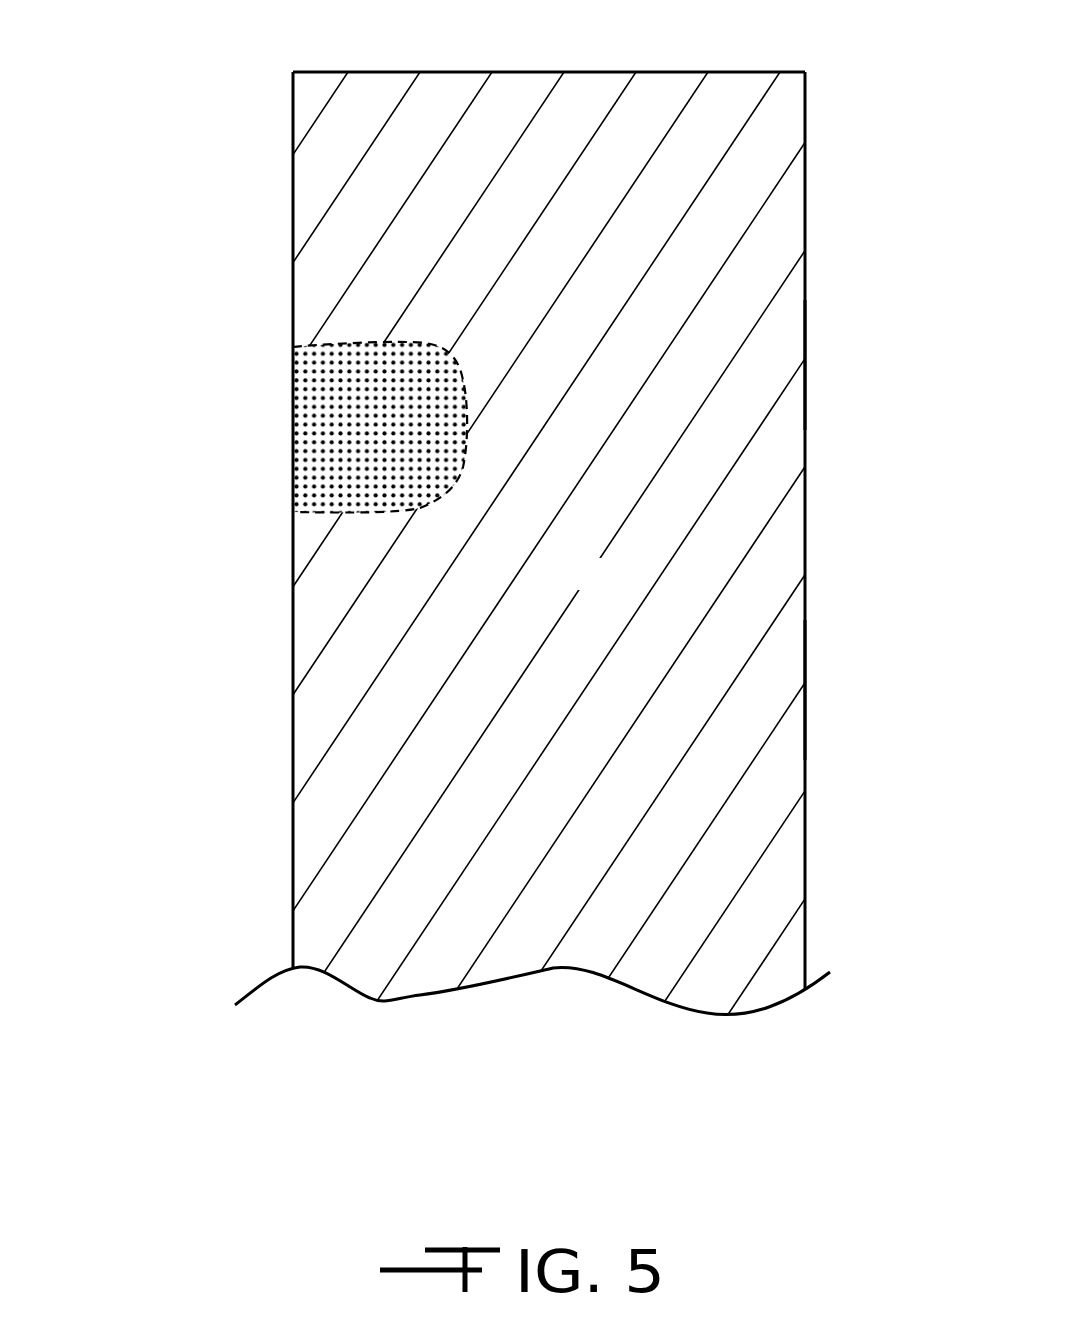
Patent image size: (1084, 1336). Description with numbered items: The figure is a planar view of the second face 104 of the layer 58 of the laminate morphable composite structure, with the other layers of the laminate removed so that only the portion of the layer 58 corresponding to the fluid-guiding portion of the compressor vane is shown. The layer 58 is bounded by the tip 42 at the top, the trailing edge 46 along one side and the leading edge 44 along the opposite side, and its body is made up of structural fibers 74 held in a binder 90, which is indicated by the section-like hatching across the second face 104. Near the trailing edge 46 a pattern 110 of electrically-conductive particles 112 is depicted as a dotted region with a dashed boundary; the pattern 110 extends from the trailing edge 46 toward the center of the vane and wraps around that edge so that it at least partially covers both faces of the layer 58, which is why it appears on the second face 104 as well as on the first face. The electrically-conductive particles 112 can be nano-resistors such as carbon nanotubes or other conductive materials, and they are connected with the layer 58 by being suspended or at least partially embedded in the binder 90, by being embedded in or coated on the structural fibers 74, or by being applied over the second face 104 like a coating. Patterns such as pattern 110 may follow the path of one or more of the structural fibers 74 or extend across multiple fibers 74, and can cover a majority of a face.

The tip 42 is at (772, 70).
The leading edge 44 is at (805, 905).
The trailing edge 46 is at (291, 912).
The layer 58 is at (175, 122).
The structural fibers 74 is at (512, 582).
The binder 90 is at (775, 367).
The second face 104 is at (755, 695).
The pattern 110 is at (330, 514).
The electrically-conductive particles 112 is at (297, 423).